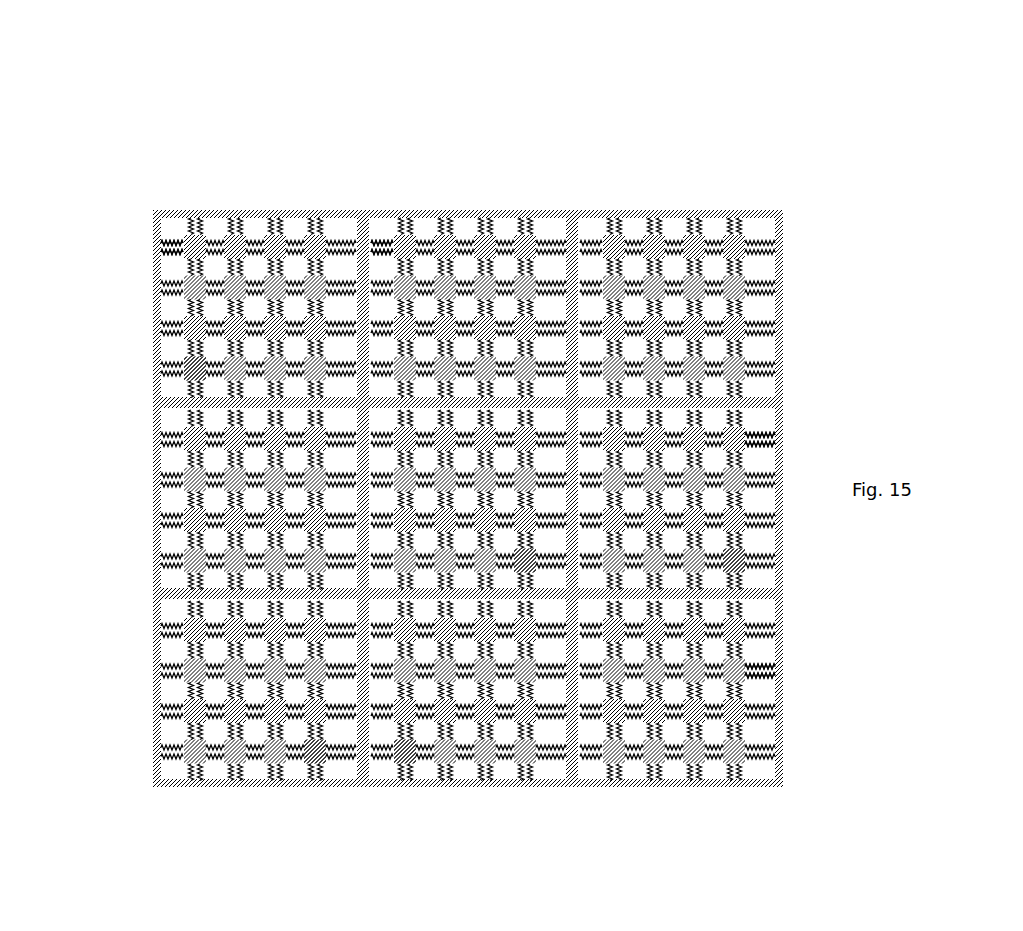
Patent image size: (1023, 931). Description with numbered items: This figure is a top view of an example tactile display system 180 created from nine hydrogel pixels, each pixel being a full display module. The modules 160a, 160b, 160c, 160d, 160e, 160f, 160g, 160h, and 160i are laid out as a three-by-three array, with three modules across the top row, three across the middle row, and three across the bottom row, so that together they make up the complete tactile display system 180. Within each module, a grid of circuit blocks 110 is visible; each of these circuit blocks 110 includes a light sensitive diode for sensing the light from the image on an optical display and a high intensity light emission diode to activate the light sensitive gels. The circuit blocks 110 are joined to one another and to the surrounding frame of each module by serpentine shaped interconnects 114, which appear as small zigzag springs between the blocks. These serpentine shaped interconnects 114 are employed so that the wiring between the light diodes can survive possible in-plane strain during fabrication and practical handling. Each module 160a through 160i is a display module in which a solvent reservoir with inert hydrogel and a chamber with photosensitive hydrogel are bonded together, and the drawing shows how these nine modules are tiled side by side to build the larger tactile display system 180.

The circuit blocks 110 is at (533, 245).
The serpentine shaped interconnects 114 is at (183, 243).
The module 160a is at (262, 211).
The module 160b is at (468, 211).
The module 160c is at (680, 211).
The module 160d is at (152, 493).
The module 160e is at (363, 532).
The module 160f is at (782, 503).
The module 160g is at (257, 784).
The module 160h is at (463, 784).
The module 160i is at (670, 784).
The tactile display system 180 is at (822, 349).